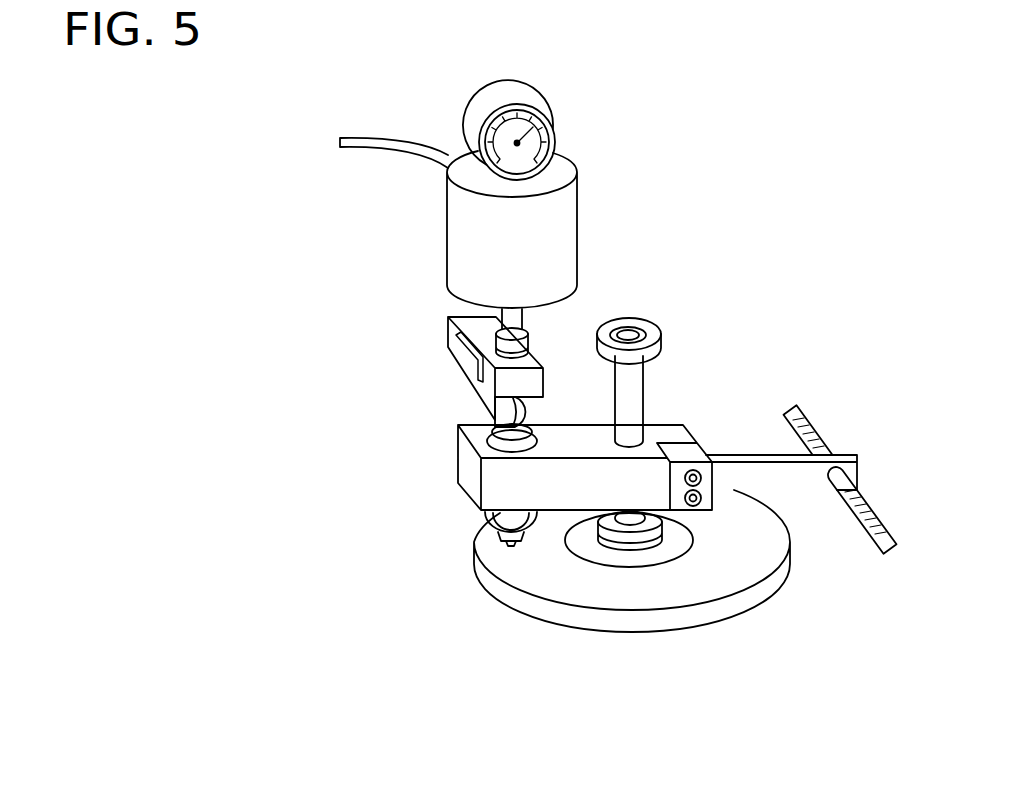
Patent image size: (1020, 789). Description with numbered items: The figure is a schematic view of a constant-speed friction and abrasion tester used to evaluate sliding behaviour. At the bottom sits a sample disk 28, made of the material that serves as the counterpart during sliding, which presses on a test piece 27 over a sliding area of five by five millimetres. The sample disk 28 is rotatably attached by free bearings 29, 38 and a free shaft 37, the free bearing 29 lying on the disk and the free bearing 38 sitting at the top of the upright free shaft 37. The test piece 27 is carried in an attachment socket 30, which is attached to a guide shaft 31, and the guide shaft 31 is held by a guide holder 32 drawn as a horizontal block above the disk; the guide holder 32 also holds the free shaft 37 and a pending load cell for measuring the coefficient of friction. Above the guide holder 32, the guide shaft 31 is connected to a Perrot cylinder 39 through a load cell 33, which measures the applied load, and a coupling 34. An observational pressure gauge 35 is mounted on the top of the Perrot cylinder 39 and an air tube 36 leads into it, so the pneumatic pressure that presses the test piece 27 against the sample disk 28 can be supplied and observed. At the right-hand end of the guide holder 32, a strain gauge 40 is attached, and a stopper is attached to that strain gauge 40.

The test piece 27 is at (500, 546).
The sample disk 28 is at (734, 568).
The free bearing 29 is at (633, 546).
The attachment socket 30 is at (504, 516).
The guide shaft 31 is at (503, 433).
The guide holder 32 is at (467, 468).
The load cell 33 is at (456, 328).
The coupling 34 is at (470, 344).
The observational pressure gauge 35 is at (558, 126).
The air tube 36 is at (372, 138).
The free shaft 37 is at (645, 390).
The free bearing 38 is at (660, 321).
The Perrot cylinder 39 is at (577, 214).
The strain gauge 40 is at (788, 474).